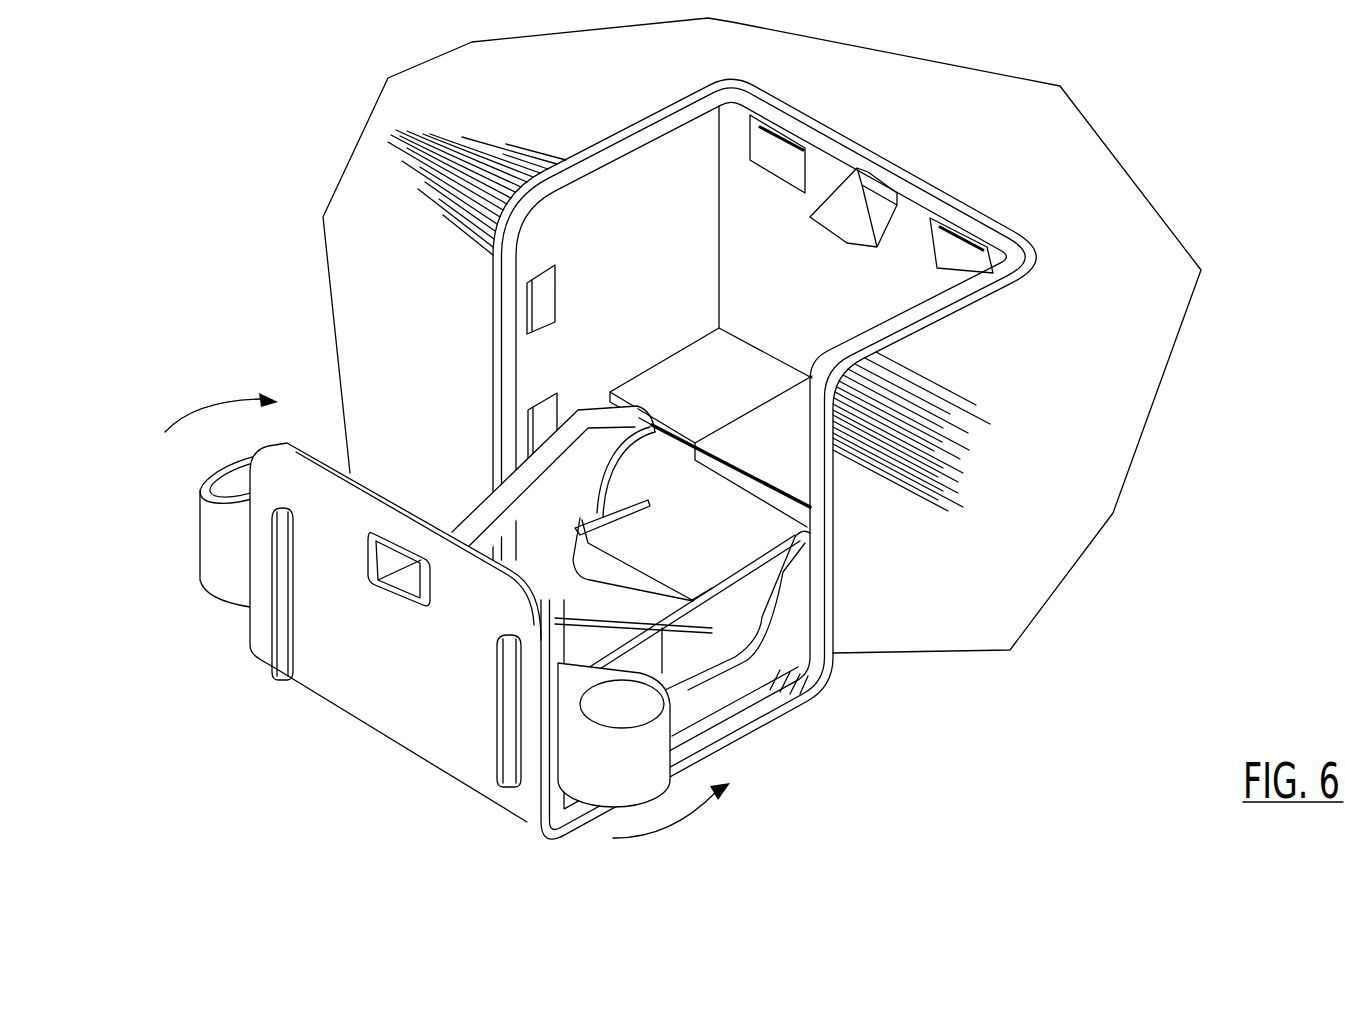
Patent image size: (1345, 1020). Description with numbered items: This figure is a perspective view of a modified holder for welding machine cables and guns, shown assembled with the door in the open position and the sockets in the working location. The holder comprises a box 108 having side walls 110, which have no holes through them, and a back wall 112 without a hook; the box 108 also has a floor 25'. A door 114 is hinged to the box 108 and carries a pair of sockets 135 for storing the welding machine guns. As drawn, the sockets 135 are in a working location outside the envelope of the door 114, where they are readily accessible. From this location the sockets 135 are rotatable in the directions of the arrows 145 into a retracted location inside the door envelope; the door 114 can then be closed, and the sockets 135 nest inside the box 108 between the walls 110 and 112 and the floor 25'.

The box 108 is at (978, 320).
The side walls 110 is at (680, 299).
The back wall 112 is at (835, 302).
The floor 25' is at (711, 427).
The door 114 is at (382, 752).
The sockets 135 is at (185, 529).
The arrows 145 is at (206, 408).